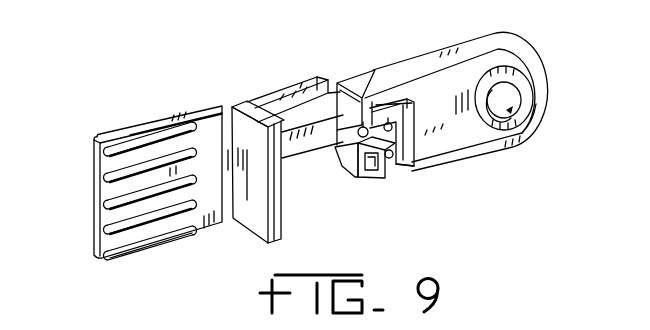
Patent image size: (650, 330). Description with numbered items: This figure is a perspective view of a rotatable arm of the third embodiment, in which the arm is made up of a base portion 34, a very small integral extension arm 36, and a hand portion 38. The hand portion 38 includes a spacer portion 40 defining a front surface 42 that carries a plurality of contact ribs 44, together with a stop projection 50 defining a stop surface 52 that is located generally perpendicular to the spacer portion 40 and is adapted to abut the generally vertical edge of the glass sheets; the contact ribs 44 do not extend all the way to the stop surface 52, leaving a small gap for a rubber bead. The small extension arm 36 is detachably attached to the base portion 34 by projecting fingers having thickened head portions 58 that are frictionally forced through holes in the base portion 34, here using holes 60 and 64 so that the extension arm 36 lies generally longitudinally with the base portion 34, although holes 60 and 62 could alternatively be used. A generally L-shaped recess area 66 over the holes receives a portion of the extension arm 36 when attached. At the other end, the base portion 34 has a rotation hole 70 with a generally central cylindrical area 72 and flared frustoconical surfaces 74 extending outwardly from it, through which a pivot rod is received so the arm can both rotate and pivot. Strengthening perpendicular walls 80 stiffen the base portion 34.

The base portion 34 is at (466, 128).
The extension arm 36 is at (301, 83).
The hand portion 38 is at (200, 110).
The spacer portion 40 is at (128, 134).
The front surface 42 is at (133, 232).
The contact ribs 44 is at (115, 202).
The stop projection 50 is at (253, 117).
The stop surface 52 is at (244, 190).
The thickened head portions 58 is at (388, 123).
The hole 60 is at (405, 150).
The hole 62 is at (388, 158).
The hole 64 is at (353, 140).
The recess area 66 is at (400, 158).
The rotation hole 70 is at (527, 130).
The central cylindrical area 72 is at (496, 92).
The frustoconical surfaces 74 is at (533, 106).
The strengthening perpendicular walls 80 is at (360, 80).